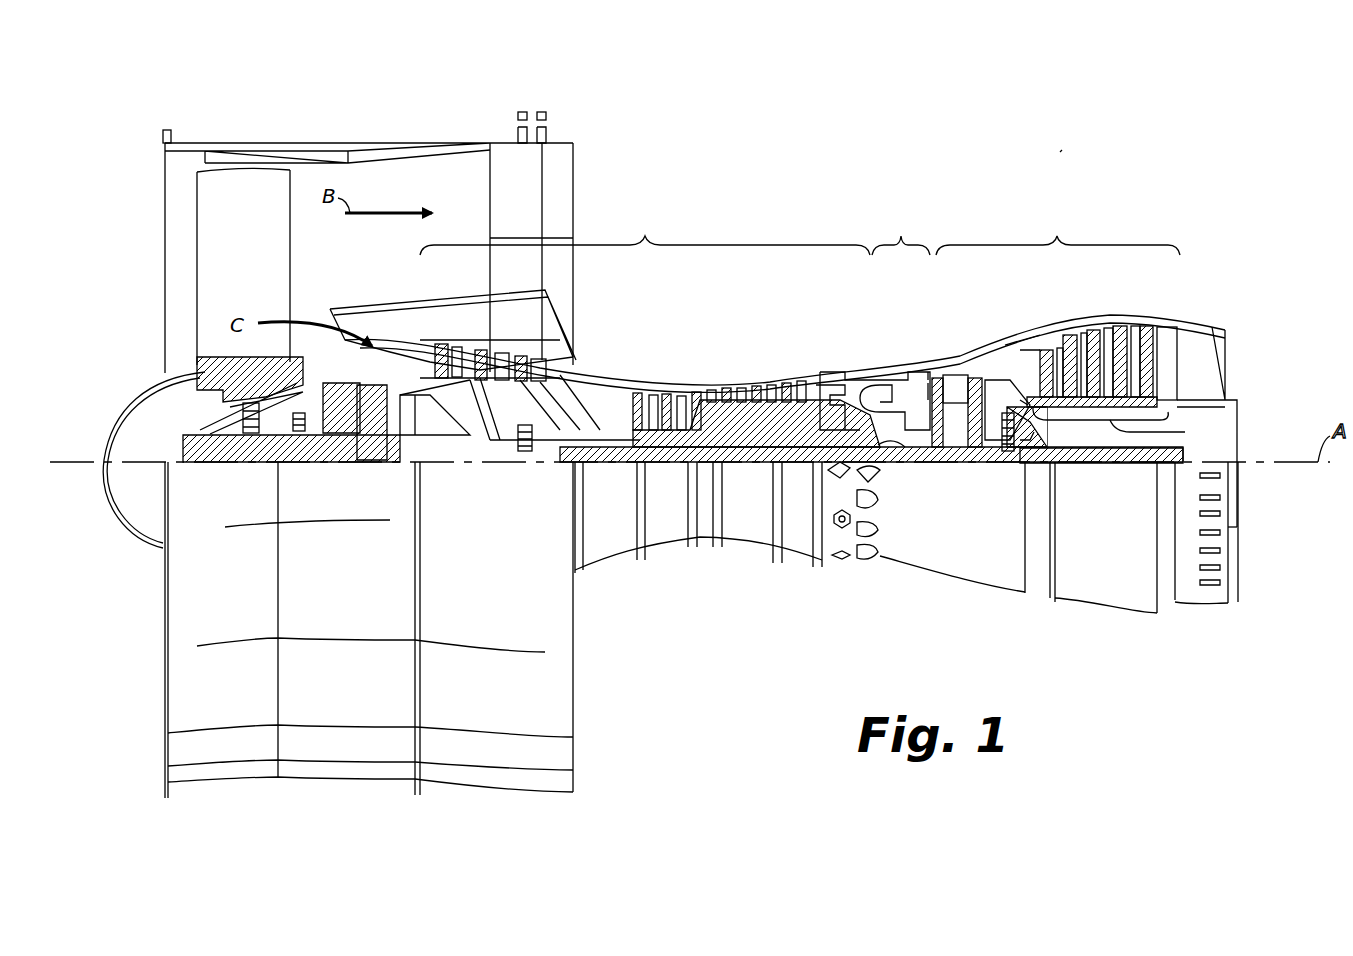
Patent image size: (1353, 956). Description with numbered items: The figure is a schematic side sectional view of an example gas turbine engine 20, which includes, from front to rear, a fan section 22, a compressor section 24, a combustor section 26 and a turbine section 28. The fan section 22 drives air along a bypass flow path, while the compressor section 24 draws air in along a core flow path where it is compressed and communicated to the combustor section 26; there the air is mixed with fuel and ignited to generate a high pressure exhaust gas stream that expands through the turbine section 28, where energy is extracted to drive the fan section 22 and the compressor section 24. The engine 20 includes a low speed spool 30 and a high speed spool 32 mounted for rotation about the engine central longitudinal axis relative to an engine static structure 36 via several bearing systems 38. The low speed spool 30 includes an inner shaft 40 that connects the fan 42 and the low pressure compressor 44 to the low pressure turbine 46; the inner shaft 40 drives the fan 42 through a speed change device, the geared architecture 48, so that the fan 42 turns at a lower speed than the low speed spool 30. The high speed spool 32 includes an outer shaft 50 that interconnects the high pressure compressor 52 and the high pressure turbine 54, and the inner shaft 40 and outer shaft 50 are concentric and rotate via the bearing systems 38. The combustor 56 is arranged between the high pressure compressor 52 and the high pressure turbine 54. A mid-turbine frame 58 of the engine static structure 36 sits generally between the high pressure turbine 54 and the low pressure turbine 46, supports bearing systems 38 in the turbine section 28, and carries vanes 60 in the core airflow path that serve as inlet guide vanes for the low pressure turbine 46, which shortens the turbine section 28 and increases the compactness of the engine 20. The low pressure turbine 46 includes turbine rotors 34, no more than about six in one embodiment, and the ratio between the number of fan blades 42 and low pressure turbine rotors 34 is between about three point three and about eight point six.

The gas turbine engine 20 is at (1070, 147).
The fan section 22 is at (395, 108).
The compressor section 24 is at (645, 228).
The combustor section 26 is at (901, 228).
The turbine section 28 is at (1058, 228).
The low speed spool 30 is at (745, 475).
The high speed spool 32 is at (780, 435).
The turbine rotors 34 is at (1170, 432).
The engine static structure 36 is at (798, 565).
The bearing systems 38 is at (250, 462).
The inner shaft 40 is at (595, 465).
The fan 42 is at (258, 247).
The low pressure compressor section 44 is at (495, 355).
The low pressure turbine section 46 is at (1097, 350).
The geared architecture 48 is at (375, 462).
The outer shaft 50 is at (895, 447).
The high pressure compressor section 52 is at (698, 425).
The high pressure turbine section 54 is at (956, 375).
The combustor 56 is at (880, 398).
The mid-turbine frame 58 is at (1002, 352).
The vanes 60 is at (1020, 400).